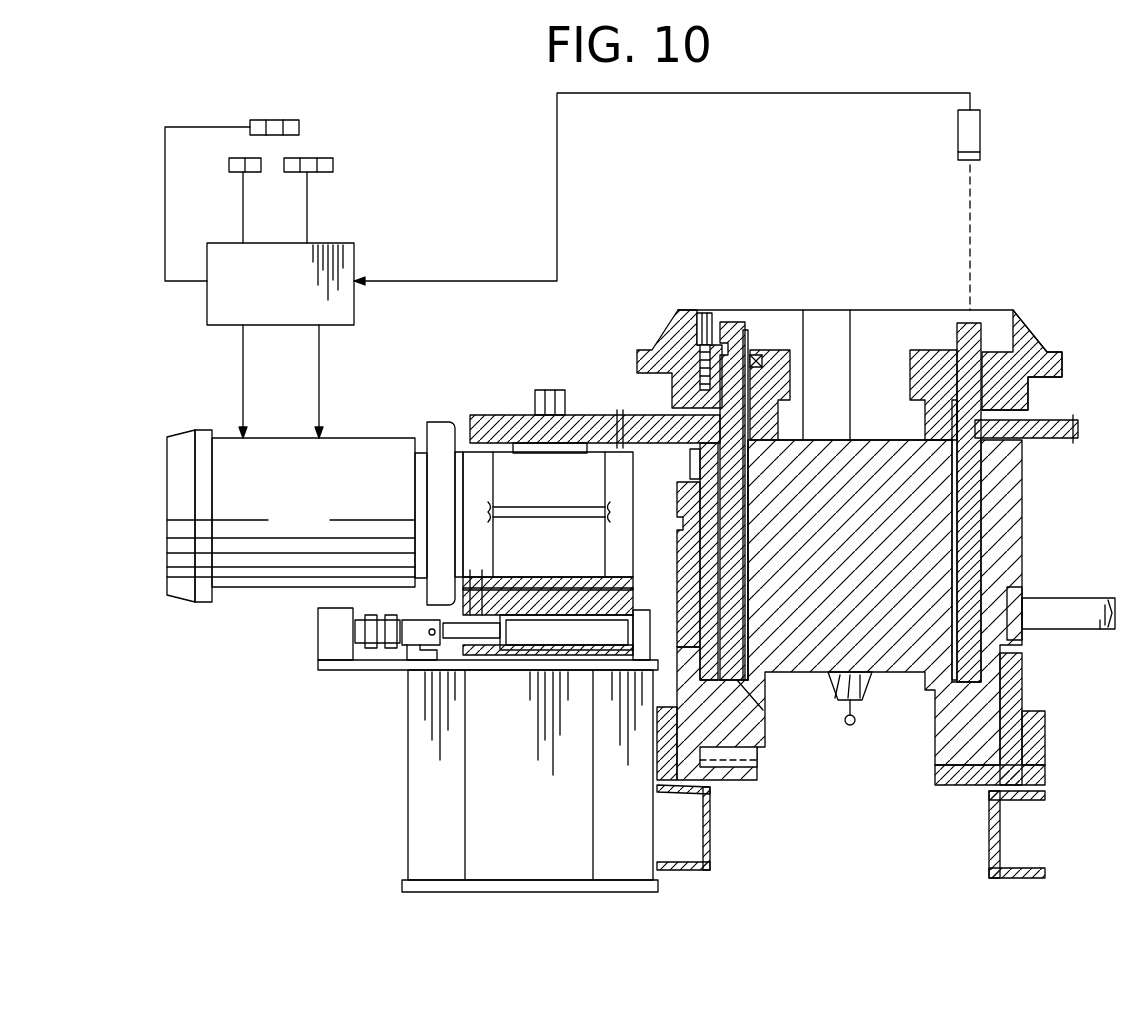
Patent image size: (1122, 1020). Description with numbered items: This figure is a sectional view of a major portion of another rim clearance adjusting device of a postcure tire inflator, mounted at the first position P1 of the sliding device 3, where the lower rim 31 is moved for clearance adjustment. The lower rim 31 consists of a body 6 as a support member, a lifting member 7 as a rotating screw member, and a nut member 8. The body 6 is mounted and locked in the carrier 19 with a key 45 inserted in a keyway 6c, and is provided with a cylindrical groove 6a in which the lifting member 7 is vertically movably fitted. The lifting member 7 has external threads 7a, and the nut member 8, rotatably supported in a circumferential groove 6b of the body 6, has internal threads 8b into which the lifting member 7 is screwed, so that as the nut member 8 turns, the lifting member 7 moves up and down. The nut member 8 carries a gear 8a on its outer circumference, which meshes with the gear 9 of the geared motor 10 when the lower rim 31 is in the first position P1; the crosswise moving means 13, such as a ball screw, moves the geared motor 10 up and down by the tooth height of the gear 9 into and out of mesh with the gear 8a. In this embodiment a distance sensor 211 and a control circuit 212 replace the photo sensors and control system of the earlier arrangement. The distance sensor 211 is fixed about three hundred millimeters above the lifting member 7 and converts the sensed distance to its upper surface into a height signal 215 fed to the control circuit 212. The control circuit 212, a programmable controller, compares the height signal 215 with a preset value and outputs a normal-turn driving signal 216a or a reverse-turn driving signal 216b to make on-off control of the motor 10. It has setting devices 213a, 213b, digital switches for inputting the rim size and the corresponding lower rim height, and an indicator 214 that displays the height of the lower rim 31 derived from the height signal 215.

The indicator 214 is at (299, 127).
The setting device 213a is at (229, 165).
The setting device 213b is at (333, 165).
The control circuit 212 is at (354, 255).
The height signal 215 is at (403, 282).
The normal-turn driving signal 216a is at (243, 350).
The reverse-turn driving signal 216b is at (320, 370).
The distance sensor 211 is at (985, 143).
The geared motor 10 is at (320, 524).
The nut member 8 is at (653, 415).
The gear 9 is at (510, 415).
The gear 8a is at (617, 415).
The internal threads 8b is at (718, 455).
The circumferential groove 6b is at (690, 518).
The lifting member 7 is at (733, 322).
The external threads 7a is at (712, 468).
The lower rim 31 is at (1017, 312).
The body 6 is at (858, 571).
The cylindrical groove 6a is at (750, 546).
The keyway 6c is at (753, 745).
The key 45 is at (750, 752).
The carrier 19 is at (1015, 690).
The first position P1 is at (850, 728).
The sliding device 3 is at (712, 820).
The crosswise moving means 13 is at (525, 633).